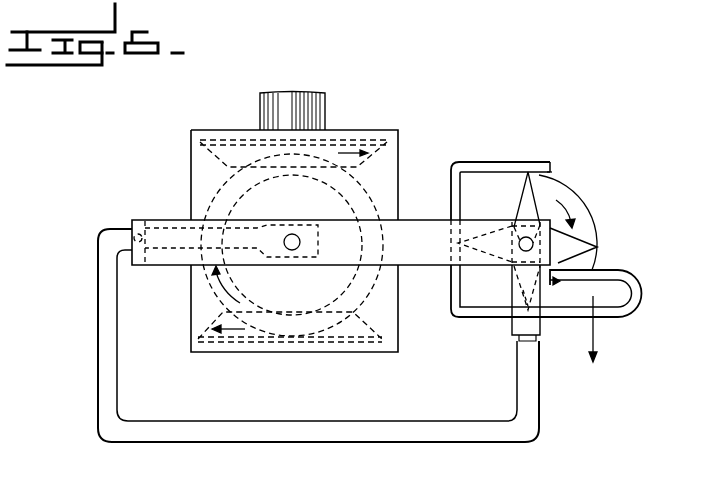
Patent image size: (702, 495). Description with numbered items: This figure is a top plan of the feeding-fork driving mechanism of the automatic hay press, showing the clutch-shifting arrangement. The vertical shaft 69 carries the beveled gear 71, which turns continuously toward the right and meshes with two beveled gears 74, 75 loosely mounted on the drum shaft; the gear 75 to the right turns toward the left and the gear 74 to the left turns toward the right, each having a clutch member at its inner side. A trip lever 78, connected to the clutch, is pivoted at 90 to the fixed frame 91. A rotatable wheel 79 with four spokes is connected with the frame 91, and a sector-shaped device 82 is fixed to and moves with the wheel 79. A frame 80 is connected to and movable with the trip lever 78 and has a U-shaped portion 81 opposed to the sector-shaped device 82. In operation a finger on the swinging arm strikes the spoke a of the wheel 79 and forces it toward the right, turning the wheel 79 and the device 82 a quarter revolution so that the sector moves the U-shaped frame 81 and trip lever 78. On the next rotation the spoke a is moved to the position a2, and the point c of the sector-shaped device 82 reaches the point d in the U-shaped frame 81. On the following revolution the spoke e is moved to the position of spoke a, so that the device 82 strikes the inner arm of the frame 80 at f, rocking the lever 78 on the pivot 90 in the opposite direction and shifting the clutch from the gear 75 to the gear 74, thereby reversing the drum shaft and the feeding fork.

The beveled gear 71 is at (368, 197).
The beveled gear 74 is at (352, 143).
The beveled gear 75 is at (360, 333).
The fixed frame 91 is at (341, 242).
The pivot 90 is at (140, 232).
The vertical shaft 69 is at (296, 234).
The trip lever 78 is at (333, 440).
The frame 80 is at (497, 167).
The U-shaped portion 81 is at (633, 305).
The sector-shaped device 82 is at (588, 220).
The rotatable wheel 79 is at (545, 198).
The striking point f is at (530, 171).
The spoke e is at (528, 200).
The point of sector-shaped device c is at (552, 173).
The spoke a is at (598, 247).
The spoke position a2 is at (522, 293).
The point in U-shaped frame d is at (582, 323).